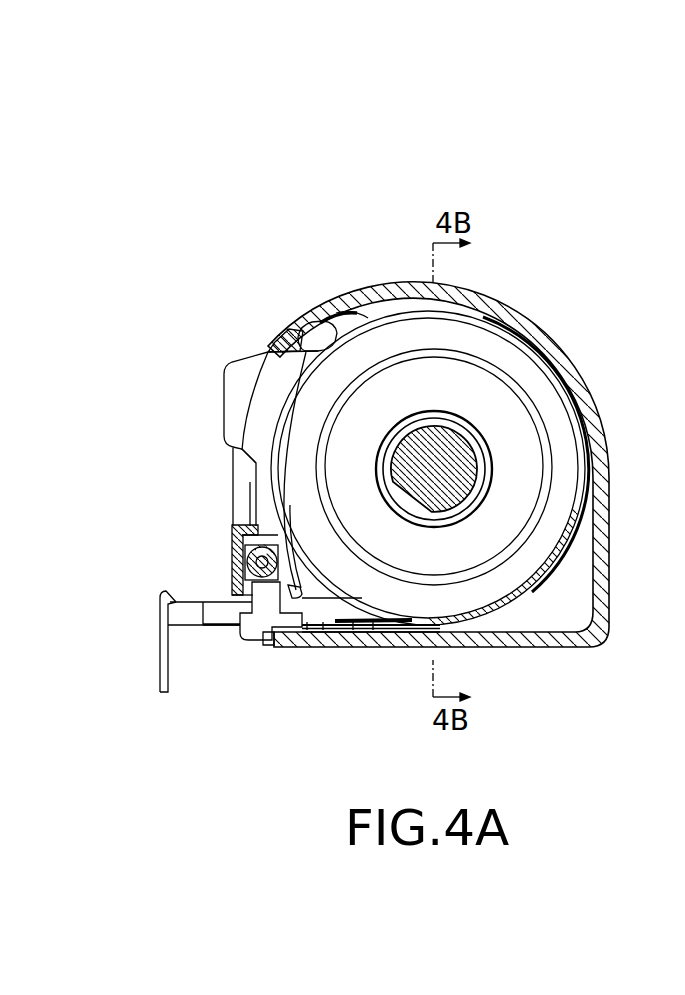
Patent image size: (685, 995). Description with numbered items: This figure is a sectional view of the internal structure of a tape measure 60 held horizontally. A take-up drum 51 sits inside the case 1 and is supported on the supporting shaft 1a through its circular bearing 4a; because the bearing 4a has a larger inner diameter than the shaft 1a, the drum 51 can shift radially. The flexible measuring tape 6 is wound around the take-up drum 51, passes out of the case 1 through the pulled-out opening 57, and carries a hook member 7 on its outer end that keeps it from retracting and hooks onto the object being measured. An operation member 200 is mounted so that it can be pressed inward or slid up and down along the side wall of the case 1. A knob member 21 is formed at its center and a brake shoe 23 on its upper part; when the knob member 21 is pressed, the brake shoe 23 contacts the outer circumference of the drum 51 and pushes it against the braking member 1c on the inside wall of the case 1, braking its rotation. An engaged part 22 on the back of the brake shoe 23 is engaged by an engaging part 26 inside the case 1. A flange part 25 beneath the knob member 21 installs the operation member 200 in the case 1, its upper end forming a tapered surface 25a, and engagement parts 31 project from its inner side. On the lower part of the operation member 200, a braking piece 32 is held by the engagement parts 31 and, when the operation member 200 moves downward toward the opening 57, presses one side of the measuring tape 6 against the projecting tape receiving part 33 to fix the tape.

The tape measure 60 is at (553, 252).
The lower case 1 is at (495, 304).
The supporting shaft 1a is at (452, 452).
The braking member 1c is at (525, 600).
The bearing 4a is at (413, 509).
The take-up drum 51 is at (548, 398).
The engaged part 22 is at (312, 320).
The brake shoe 23 is at (356, 316).
The engaging part 26 is at (288, 336).
The operation member 200 is at (244, 354).
The knob member 21 is at (232, 400).
The flange part 25 is at (263, 510).
The tapered surface 25a is at (262, 470).
The engagement parts 31 is at (293, 540).
The pulled-out opening 57 is at (243, 594).
The measuring tape 6 is at (221, 628).
The hook member 7 is at (161, 659).
The braking piece 32 is at (306, 600).
The tape receiving part 33 is at (348, 632).